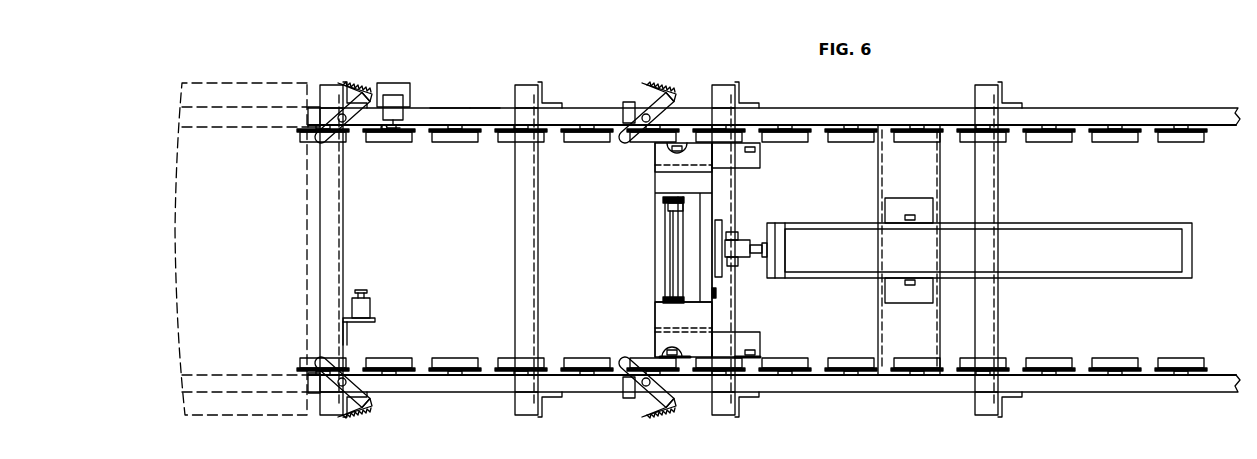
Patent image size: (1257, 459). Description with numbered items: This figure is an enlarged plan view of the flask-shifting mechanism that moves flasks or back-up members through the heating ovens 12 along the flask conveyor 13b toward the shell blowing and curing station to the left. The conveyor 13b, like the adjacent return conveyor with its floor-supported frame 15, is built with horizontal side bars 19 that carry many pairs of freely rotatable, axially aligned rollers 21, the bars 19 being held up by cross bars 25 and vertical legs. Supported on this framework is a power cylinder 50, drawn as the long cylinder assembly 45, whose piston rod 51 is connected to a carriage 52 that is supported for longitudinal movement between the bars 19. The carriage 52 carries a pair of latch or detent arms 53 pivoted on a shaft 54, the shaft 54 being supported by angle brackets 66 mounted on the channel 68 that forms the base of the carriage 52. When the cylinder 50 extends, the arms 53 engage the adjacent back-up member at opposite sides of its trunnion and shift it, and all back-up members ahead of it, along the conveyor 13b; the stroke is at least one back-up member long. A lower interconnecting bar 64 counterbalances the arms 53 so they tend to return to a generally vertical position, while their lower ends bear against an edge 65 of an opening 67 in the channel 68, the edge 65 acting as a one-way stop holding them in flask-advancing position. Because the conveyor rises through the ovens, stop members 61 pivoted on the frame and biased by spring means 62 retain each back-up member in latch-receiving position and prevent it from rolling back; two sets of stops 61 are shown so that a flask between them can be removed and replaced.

The flask heating oven 12 is at (262, 80).
The flask conveyor 13b is at (1093, 104).
The floor-supported frame 15 is at (449, 103).
The side bars 19 is at (482, 118).
The rollers 21 is at (436, 139).
The cross bars 25 is at (323, 291).
The hydraulic cylinder 45 is at (1045, 214).
The power cylinder 50 is at (1079, 280).
The piston rod 51 is at (762, 240).
The carriage 52 is at (648, 286).
The latch arms 53 is at (662, 199).
The shaft 54 is at (665, 220).
The stop members 61 is at (322, 140).
The spring means 62 is at (358, 85).
The interconnecting bar 64 is at (677, 205).
The edge 65 is at (663, 243).
The angle brackets 66 is at (656, 176).
The opening 67 is at (690, 258).
The channel 68 is at (702, 158).